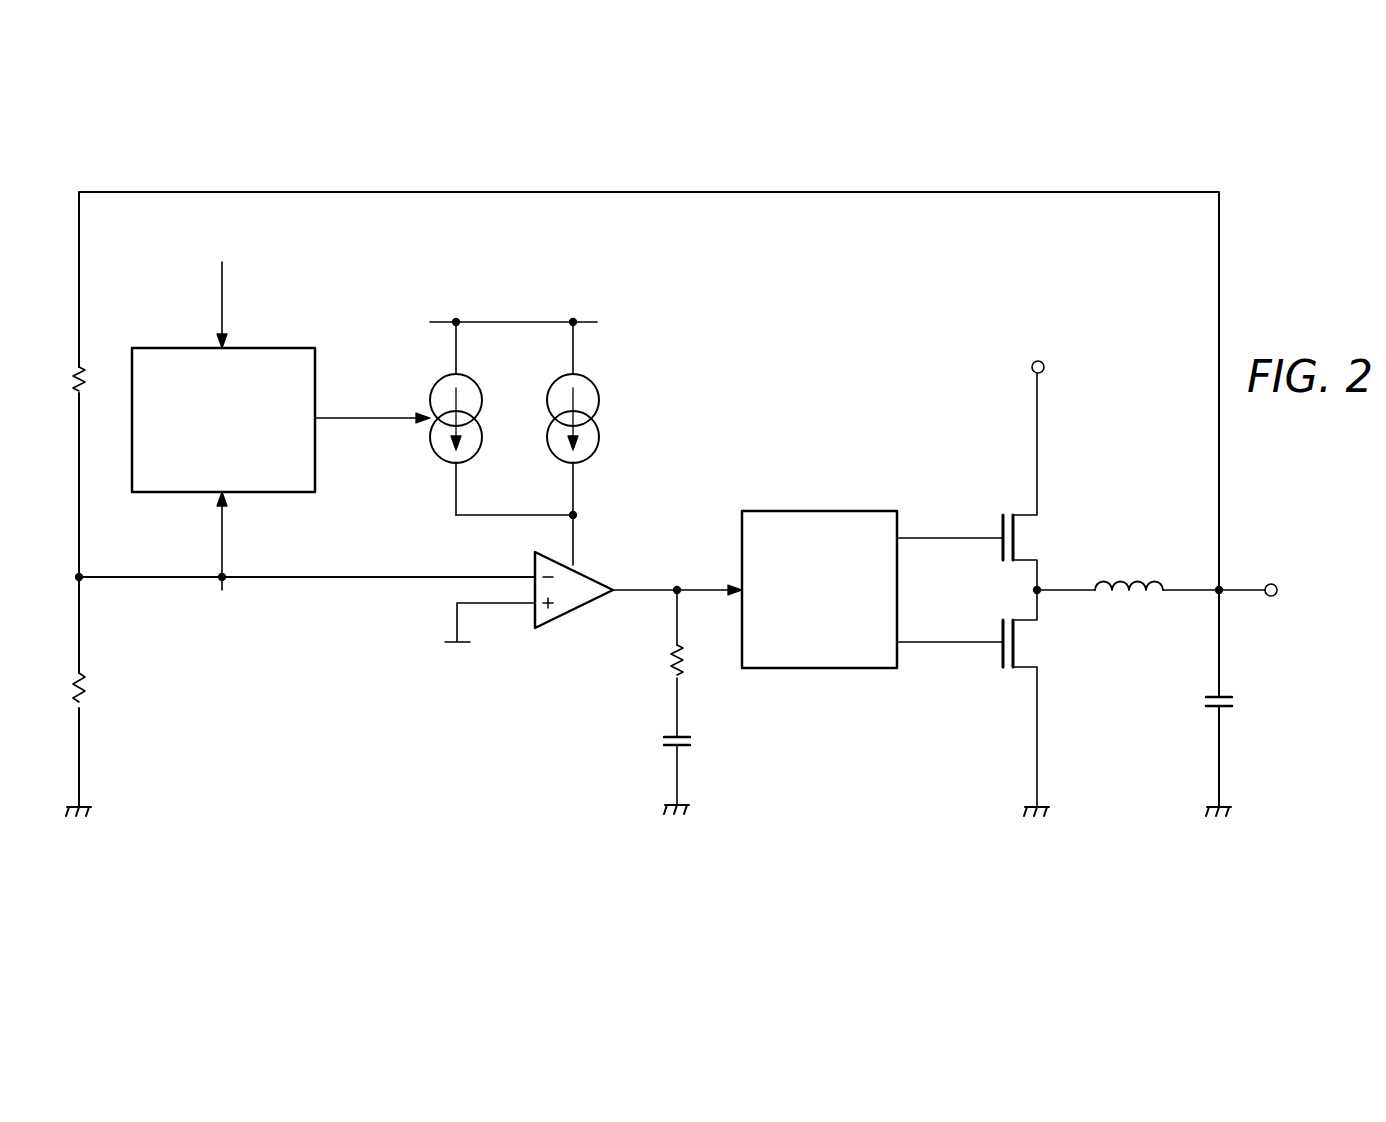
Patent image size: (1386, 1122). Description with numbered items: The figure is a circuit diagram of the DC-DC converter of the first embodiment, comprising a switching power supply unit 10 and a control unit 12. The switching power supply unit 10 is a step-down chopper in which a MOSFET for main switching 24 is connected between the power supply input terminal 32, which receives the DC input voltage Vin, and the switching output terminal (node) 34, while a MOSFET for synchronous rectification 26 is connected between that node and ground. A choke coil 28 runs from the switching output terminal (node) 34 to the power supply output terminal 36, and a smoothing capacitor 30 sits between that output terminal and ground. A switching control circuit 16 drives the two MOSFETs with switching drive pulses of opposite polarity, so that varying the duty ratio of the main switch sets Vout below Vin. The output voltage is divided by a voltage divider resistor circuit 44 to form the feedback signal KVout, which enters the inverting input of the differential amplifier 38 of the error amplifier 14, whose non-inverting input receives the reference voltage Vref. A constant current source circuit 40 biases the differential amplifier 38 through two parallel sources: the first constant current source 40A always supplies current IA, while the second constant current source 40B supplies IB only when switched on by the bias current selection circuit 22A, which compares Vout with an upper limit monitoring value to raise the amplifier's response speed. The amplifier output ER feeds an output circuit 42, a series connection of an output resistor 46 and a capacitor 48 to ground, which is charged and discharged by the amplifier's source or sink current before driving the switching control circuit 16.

The switching power supply unit 10 is at (1132, 637).
The control unit 12 is at (778, 742).
The error amplifier 14 is at (553, 672).
The switching control circuit 16 is at (818, 511).
The bias current selection circuit 22A is at (177, 348).
The MOSFET for main switching 24 is at (1000, 548).
The MOSFET for synchronous rectification 26 is at (1000, 654).
The choke coil 28 is at (1128, 577).
The capacitor 30 is at (1236, 703).
The power supply input terminal 32 is at (1045, 370).
The switching output terminal (node) 34 is at (1045, 595).
The power supply output terminal 36 is at (1272, 583).
The differential amplifier 38 is at (583, 576).
The constant current source circuit 40 is at (492, 297).
The first constant current source 40A is at (594, 380).
The second constant current source 40B is at (437, 380).
The output circuit 42 is at (670, 697).
The voltage divider resistor circuit 44 is at (88, 585).
The output resistor 46 is at (668, 671).
The capacitor 48 is at (662, 740).